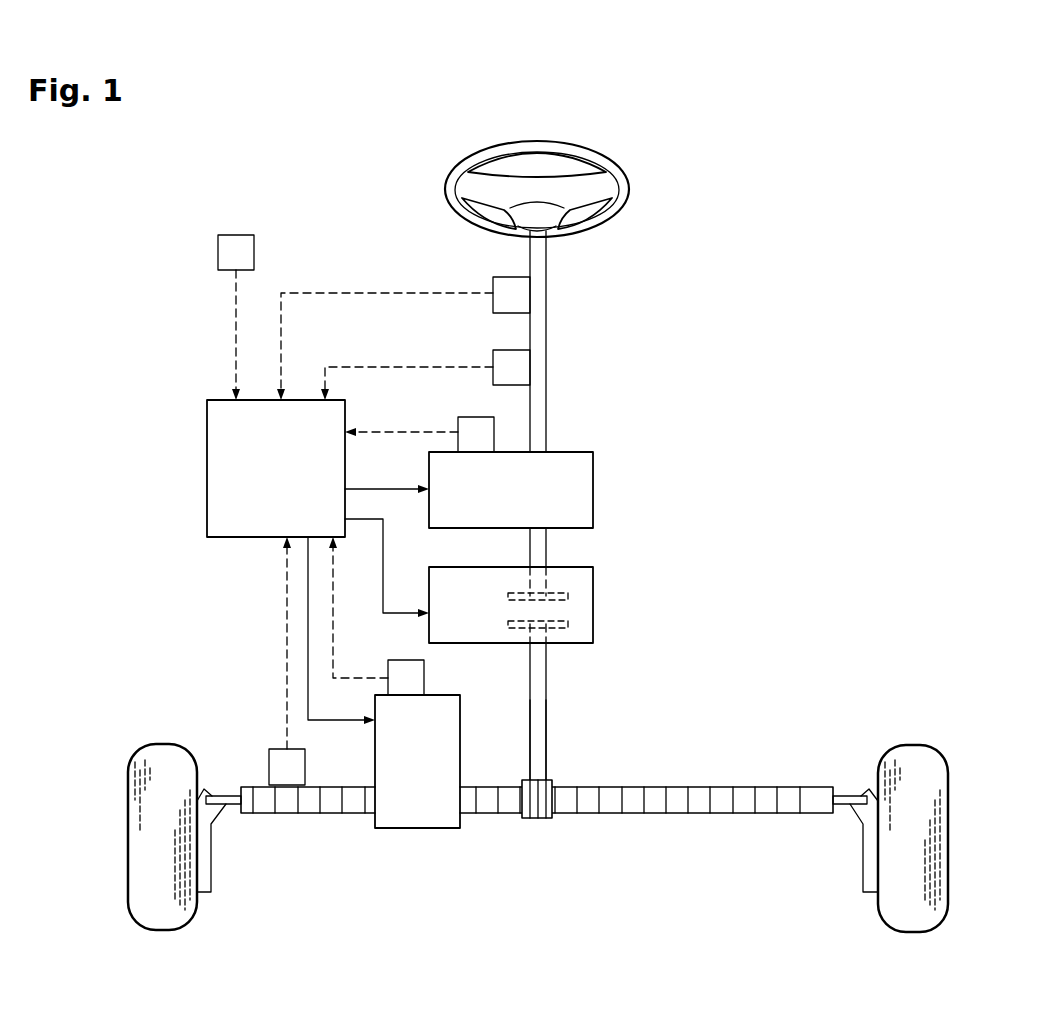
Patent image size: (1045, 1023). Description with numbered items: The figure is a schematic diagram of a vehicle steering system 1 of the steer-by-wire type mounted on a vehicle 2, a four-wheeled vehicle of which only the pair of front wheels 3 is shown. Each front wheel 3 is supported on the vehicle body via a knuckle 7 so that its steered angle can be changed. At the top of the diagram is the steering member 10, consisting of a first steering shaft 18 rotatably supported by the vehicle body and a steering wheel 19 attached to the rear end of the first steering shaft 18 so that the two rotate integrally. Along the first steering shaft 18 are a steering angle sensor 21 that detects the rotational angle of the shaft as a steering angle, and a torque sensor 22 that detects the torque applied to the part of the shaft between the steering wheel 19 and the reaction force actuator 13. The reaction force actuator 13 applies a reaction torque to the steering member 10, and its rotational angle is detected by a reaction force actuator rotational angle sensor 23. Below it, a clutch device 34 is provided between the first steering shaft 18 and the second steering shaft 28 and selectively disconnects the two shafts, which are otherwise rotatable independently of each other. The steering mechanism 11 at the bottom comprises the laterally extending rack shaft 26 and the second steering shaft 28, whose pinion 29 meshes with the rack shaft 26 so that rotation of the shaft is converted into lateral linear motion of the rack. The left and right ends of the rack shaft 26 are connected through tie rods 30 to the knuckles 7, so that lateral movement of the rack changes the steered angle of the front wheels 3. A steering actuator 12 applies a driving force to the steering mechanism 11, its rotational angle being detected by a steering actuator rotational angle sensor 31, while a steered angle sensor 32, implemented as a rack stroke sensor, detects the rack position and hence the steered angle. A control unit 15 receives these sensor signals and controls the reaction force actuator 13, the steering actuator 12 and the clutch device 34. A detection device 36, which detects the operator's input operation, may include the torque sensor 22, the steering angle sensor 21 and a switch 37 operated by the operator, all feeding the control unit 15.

The vehicle steering system 1 is at (427, 145).
The vehicle 2 is at (259, 70).
The front wheel 3 is at (157, 930).
The knuckle 7 is at (205, 880).
The steering member 10 is at (583, 176).
The steering mechanism 11 is at (537, 848).
The steering actuator 12 is at (416, 833).
The reaction force actuator 13 is at (593, 495).
The control unit 15 is at (225, 540).
The first steering shaft 18 is at (548, 315).
The steering wheel 19 is at (603, 222).
The steering angle sensor 21 is at (497, 276).
The torque sensor 22 is at (505, 350).
The reaction force actuator rotational angle sensor 23 is at (472, 417).
The rack shaft 26 is at (678, 813).
The second steering shaft 28 is at (547, 715).
The pinion 29 is at (537, 818).
The tie rod 30 is at (233, 805).
The steering actuator rotational angle sensor 31 is at (424, 678).
The steered angle sensor 32 is at (269, 765).
The clutch device 34 is at (593, 610).
The detection device 36 is at (360, 272).
The switch 37 is at (237, 235).